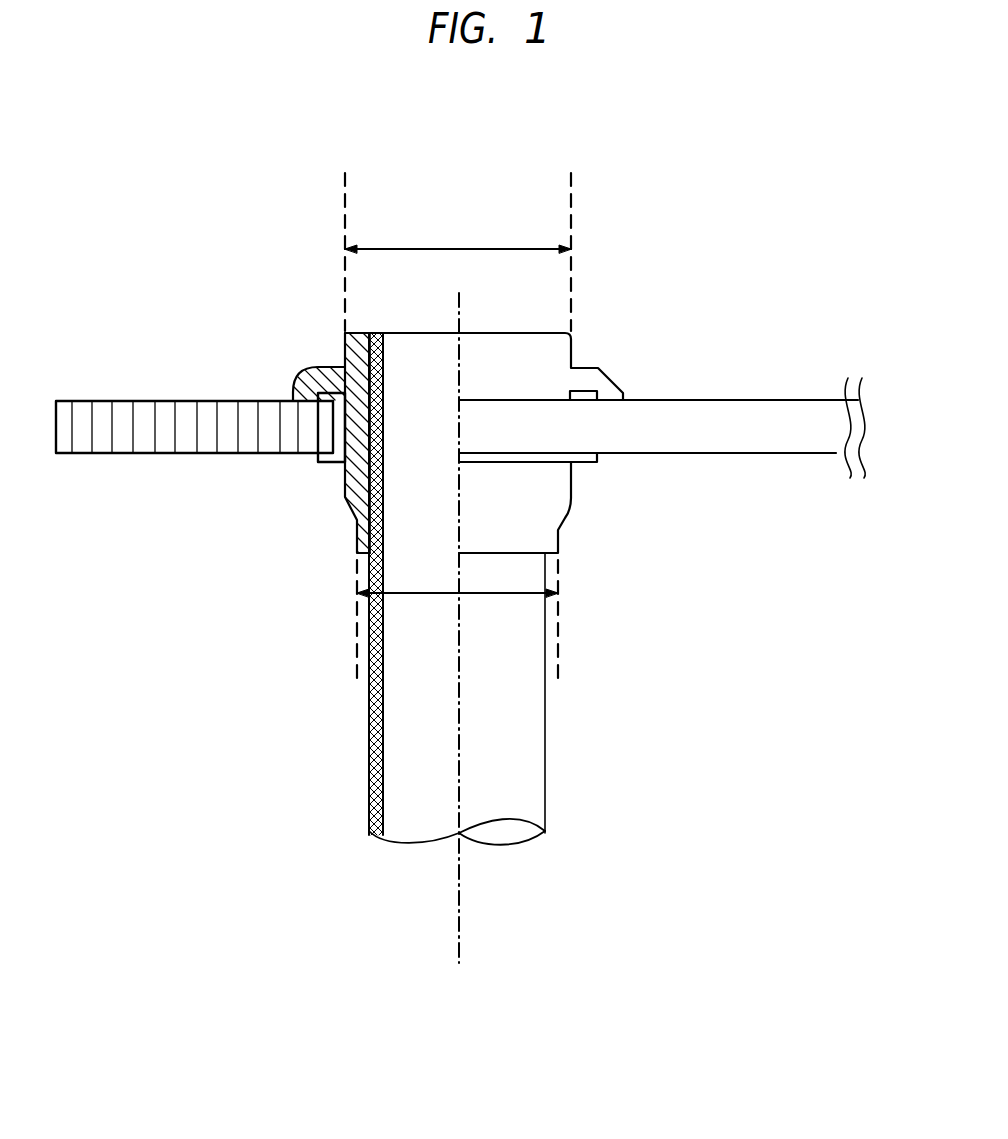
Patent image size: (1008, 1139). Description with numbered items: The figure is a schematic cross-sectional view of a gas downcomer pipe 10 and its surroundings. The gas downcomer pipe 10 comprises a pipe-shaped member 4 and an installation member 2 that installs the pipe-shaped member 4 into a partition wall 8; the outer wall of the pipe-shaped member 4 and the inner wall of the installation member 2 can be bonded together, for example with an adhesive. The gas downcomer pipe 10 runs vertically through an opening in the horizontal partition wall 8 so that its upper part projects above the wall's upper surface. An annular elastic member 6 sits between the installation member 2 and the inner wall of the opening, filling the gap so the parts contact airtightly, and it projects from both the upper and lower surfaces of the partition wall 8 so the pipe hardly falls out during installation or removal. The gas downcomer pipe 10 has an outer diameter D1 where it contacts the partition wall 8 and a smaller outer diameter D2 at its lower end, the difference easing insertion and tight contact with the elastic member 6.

The installation member 2 is at (297, 377).
The pipe-shaped member 4 is at (547, 623).
The elastic member 6 is at (318, 462).
The partition wall 8 is at (712, 400).
The gas downcomer pipe 10 is at (662, 775).
The outer diameter D1 is at (402, 247).
The outer diameter D2 is at (507, 592).